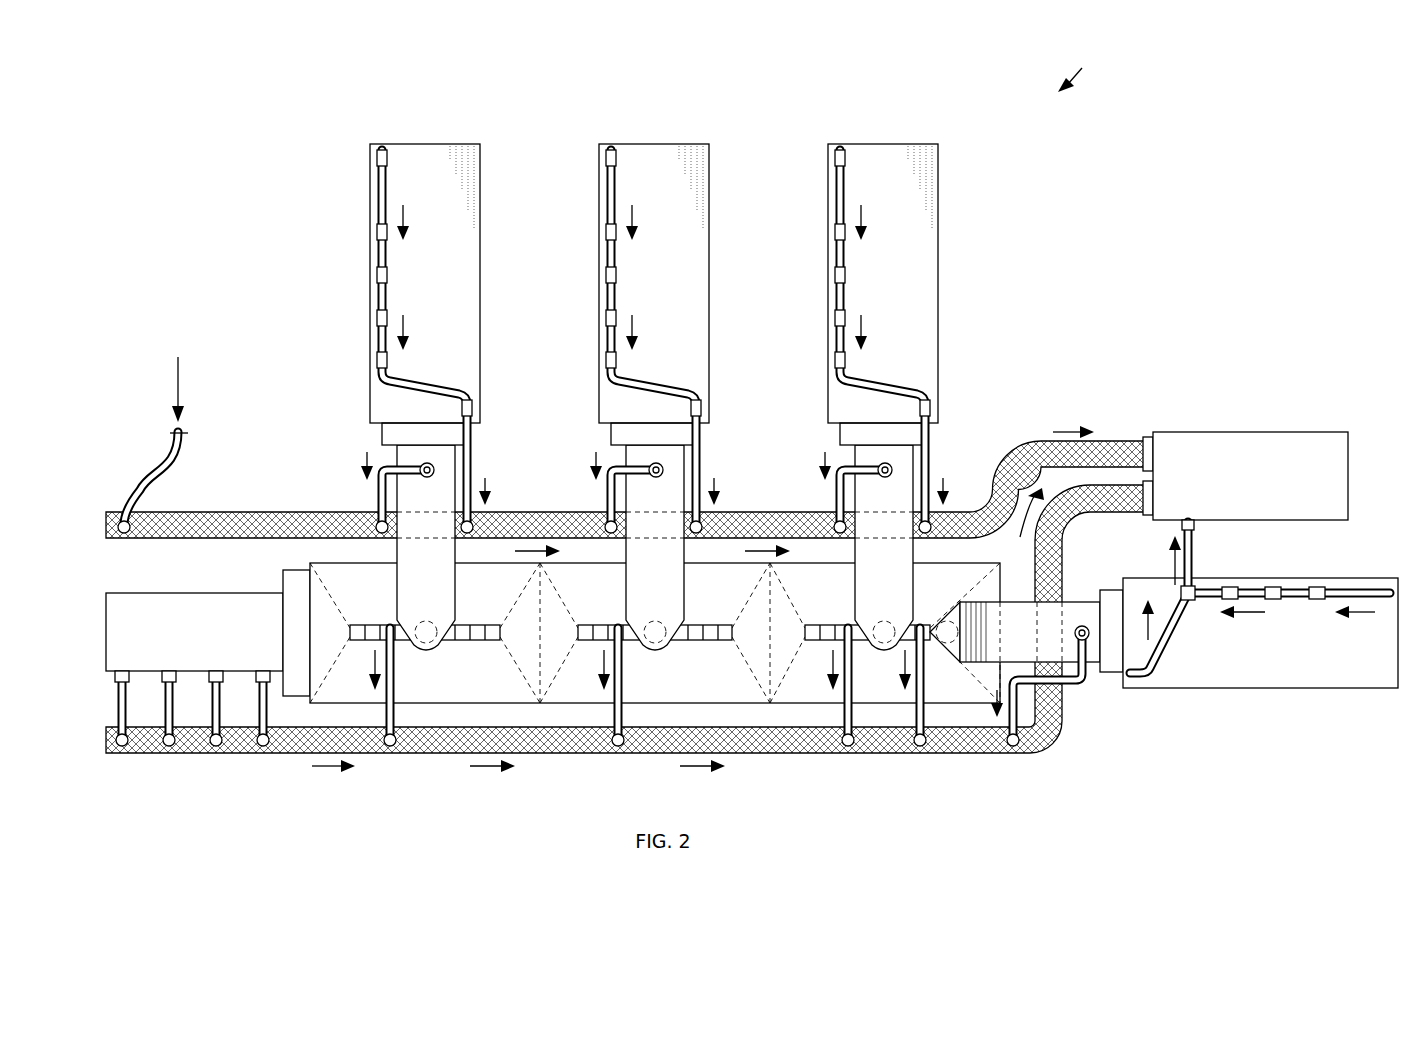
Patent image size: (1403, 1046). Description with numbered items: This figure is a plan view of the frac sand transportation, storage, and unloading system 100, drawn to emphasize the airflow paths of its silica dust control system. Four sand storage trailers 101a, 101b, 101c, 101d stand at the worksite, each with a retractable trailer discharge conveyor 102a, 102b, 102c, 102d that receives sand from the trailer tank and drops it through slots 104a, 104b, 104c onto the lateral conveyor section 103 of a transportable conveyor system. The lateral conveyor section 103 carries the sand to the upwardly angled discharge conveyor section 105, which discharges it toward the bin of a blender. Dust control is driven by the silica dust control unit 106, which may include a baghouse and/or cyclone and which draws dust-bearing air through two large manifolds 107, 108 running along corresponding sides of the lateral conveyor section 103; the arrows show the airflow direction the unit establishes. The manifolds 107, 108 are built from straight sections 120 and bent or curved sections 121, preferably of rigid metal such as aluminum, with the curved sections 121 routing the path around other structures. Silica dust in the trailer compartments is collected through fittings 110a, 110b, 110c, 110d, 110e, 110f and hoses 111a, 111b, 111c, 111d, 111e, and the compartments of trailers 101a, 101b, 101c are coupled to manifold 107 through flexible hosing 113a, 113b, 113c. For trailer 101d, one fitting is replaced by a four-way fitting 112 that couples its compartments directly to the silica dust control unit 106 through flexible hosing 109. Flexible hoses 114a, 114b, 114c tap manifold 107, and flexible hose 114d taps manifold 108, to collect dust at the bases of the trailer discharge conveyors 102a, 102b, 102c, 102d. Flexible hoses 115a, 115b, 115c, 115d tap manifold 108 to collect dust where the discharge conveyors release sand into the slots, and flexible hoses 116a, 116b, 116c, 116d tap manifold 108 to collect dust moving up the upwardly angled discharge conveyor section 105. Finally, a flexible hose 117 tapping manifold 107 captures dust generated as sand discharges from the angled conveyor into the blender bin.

The frac sand transportation, storage, and unloading system 100 is at (1084, 65).
The sand storage trailer 101a is at (448, 144).
The sand storage trailer 101b is at (678, 144).
The sand storage trailer 101c is at (930, 144).
The sand storage trailer 101d is at (1264, 688).
The trailer discharge conveyor 102a is at (382, 434).
The trailer discharge conveyor 102b is at (614, 434).
The trailer discharge conveyor 102c is at (843, 434).
The trailer discharge conveyor 102d is at (1113, 672).
The lateral conveyor section 103 is at (468, 705).
The slot 104a is at (481, 625).
The slot 104b is at (712, 625).
The slot 104c is at (809, 625).
The upwardly angled discharge conveyor section 105 is at (197, 593).
The silica dust control unit 106 is at (1257, 432).
The manifold 107 is at (1117, 441).
The manifold 108 is at (600, 755).
The flexible hosing 109 is at (1194, 560).
The fitting 110a is at (378, 162).
The fitting 110b is at (377, 232).
The fitting 110c is at (377, 275).
The fitting 110d is at (377, 318).
The fitting 110e is at (377, 360).
The fitting 110f is at (462, 408).
The hose 111a is at (607, 185).
The hose 111b is at (607, 248).
The hose 111c is at (607, 283).
The hose 111d is at (607, 325).
The hose 111e is at (655, 387).
The four-way fitting 112 is at (1188, 600).
The flexible hosing 113a is at (473, 450).
The flexible hosing 113b is at (702, 450).
The flexible hosing 113c is at (934, 420).
The flexible hose 114a is at (379, 502).
The flexible hose 114b is at (608, 502).
The flexible hose 114c is at (837, 502).
The flexible hose 114d is at (1018, 746).
The flexible hose 115a is at (396, 665).
The flexible hose 115b is at (623, 665).
The flexible hose 115c is at (843, 748).
The flexible hose 115d is at (922, 748).
The flexible hose 116a is at (128, 710).
The flexible hose 116b is at (165, 745).
The flexible hose 116c is at (222, 710).
The flexible hose 116d is at (258, 745).
The flexible hose 117 is at (153, 476).
The straight section 120 is at (262, 512).
The bent or curved section 121 is at (984, 448).